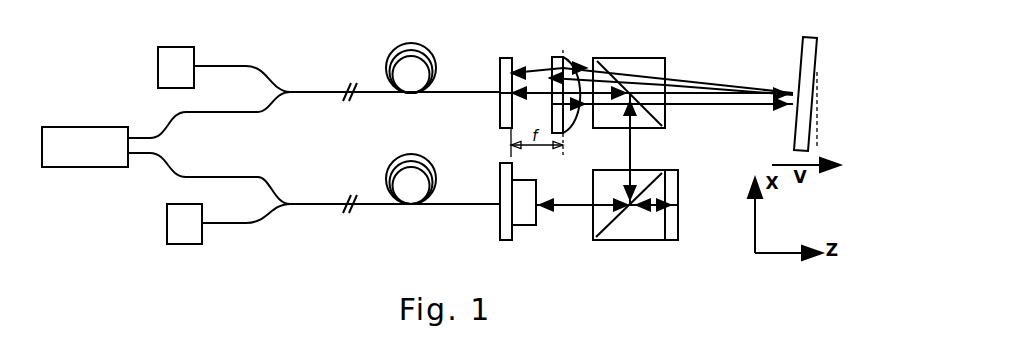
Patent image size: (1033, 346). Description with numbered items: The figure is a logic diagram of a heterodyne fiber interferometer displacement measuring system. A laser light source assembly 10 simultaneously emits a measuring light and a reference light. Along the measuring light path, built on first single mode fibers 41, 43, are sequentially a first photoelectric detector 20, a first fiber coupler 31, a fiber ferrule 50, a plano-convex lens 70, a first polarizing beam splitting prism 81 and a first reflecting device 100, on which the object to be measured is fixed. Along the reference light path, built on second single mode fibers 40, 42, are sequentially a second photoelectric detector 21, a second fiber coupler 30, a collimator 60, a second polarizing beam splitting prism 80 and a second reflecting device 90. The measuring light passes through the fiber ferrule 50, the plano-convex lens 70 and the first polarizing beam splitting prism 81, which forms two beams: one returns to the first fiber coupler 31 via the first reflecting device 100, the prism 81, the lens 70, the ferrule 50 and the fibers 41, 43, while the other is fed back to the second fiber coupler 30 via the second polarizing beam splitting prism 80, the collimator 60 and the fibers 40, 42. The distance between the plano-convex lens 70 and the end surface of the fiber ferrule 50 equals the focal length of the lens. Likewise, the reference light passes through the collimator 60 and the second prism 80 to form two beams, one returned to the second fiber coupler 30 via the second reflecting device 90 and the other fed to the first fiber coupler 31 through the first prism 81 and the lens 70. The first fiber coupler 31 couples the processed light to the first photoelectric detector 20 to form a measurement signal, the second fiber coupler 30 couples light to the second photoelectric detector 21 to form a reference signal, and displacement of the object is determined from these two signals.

The laser light source assembly 10 is at (88, 126).
The first photoelectric detector 20 is at (177, 46).
The second photoelectric detector 21 is at (185, 247).
The second fiber coupler 30 is at (308, 206).
The first fiber coupler 31 is at (293, 86).
The second single mode fiber 40 is at (167, 172).
The first single mode fiber 41 is at (168, 120).
The second single mode fiber 42 is at (473, 207).
The first single mode fiber 43 is at (483, 90).
The fiber ferrule 50 is at (510, 58).
The collimator 60 is at (523, 224).
The plano-convex lens 70 is at (563, 53).
The second polarizing beam splitting prism 80 is at (630, 241).
The first polarizing beam splitting prism 81 is at (628, 58).
The second reflecting device 90 is at (673, 242).
The first reflecting device 100 is at (813, 37).